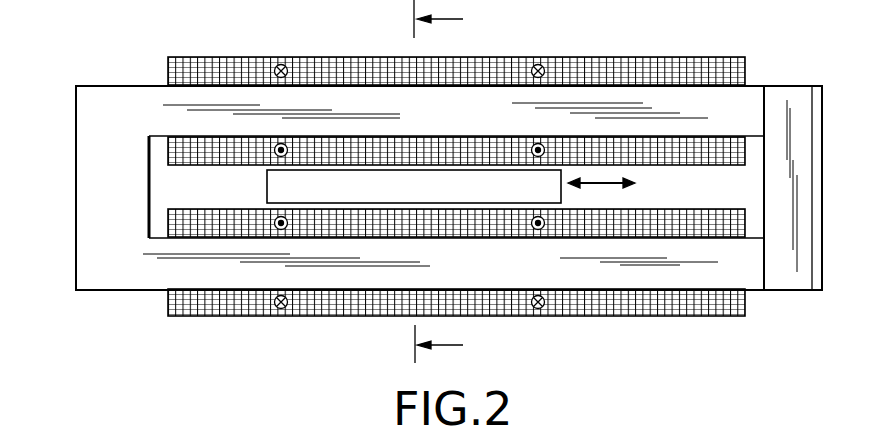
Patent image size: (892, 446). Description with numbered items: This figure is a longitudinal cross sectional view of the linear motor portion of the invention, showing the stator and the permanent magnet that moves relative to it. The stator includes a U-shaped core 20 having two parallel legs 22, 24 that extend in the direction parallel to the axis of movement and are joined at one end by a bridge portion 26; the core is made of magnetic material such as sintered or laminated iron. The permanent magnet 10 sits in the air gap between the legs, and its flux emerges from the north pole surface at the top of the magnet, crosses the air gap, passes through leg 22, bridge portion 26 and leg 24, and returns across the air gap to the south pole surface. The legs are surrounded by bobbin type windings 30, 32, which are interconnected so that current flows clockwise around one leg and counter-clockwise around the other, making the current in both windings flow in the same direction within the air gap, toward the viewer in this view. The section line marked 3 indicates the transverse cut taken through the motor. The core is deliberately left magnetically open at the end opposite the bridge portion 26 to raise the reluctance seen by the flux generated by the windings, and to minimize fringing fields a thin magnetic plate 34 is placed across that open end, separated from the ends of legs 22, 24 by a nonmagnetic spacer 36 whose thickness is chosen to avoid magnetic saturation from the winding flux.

The section line 3- 3 is at (453, 185).
The permanent magnet 10 is at (267, 184).
The U-shaped core 20 is at (90, 306).
The leg 22 is at (743, 98).
The leg 24 is at (738, 270).
The bridge portion 26 is at (93, 165).
The bobbin type winding 30 is at (600, 46).
The bobbin type winding 32 is at (597, 316).
The thin magnetic plate 34 is at (822, 185).
The nonmagnetic spacer 36 is at (783, 92).